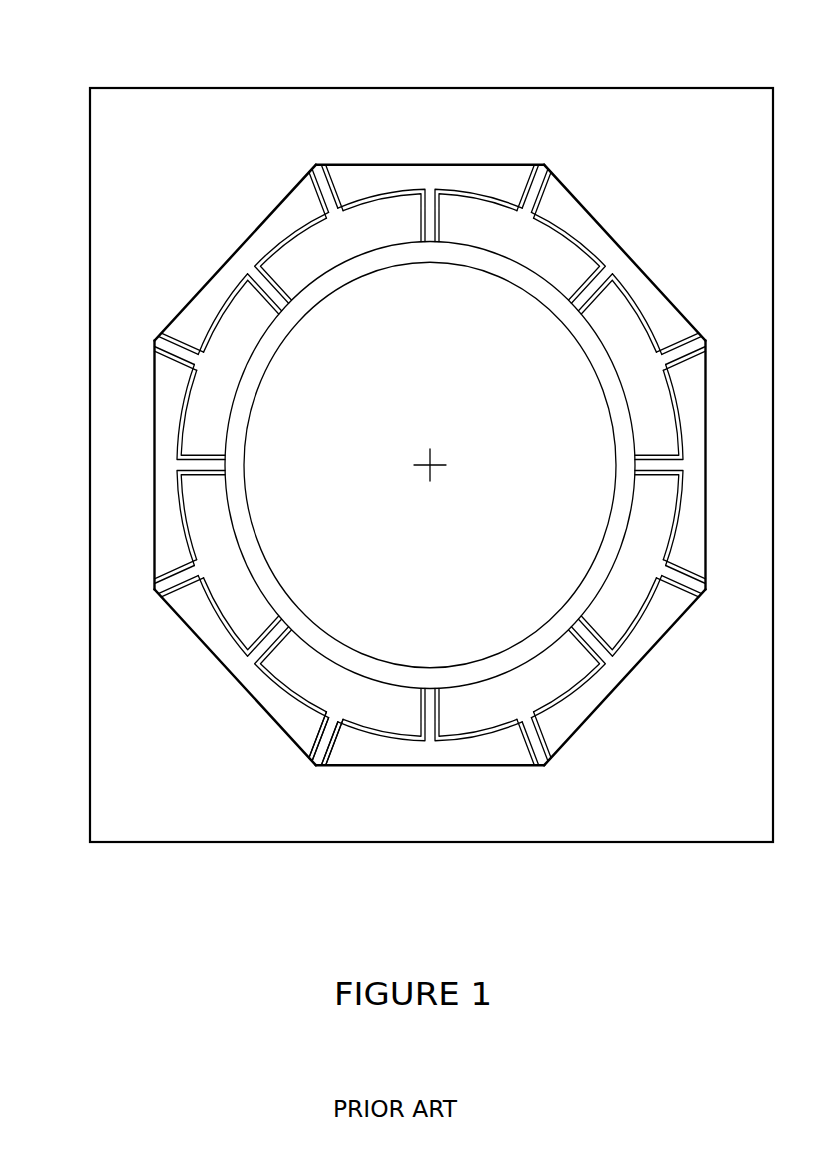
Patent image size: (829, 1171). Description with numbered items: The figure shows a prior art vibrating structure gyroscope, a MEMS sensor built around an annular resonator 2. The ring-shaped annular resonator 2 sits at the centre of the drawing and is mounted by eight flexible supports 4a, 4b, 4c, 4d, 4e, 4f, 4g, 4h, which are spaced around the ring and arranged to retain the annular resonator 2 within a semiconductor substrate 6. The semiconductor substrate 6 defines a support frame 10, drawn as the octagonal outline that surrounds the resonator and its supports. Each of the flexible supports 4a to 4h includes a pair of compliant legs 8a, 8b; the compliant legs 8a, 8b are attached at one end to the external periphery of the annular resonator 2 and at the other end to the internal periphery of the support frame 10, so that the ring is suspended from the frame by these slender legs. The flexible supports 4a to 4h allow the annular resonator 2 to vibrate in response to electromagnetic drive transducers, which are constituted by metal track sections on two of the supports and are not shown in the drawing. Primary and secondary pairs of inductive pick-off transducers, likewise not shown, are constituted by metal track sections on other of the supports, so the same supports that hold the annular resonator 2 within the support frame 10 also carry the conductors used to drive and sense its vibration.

The annular resonator 2 is at (552, 297).
The flexible support 4a is at (548, 187).
The flexible support 4b is at (690, 363).
The flexible support 4c is at (705, 550).
The flexible support 4d is at (530, 765).
The flexible support 4e is at (338, 742).
The flexible support 4f is at (176, 598).
The flexible support 4g is at (168, 328).
The flexible support 4h is at (310, 172).
The semiconductor substrate 6 is at (436, 415).
The compliant leg 8a is at (329, 762).
The compliant leg 8b is at (306, 742).
The support frame 10 is at (647, 817).